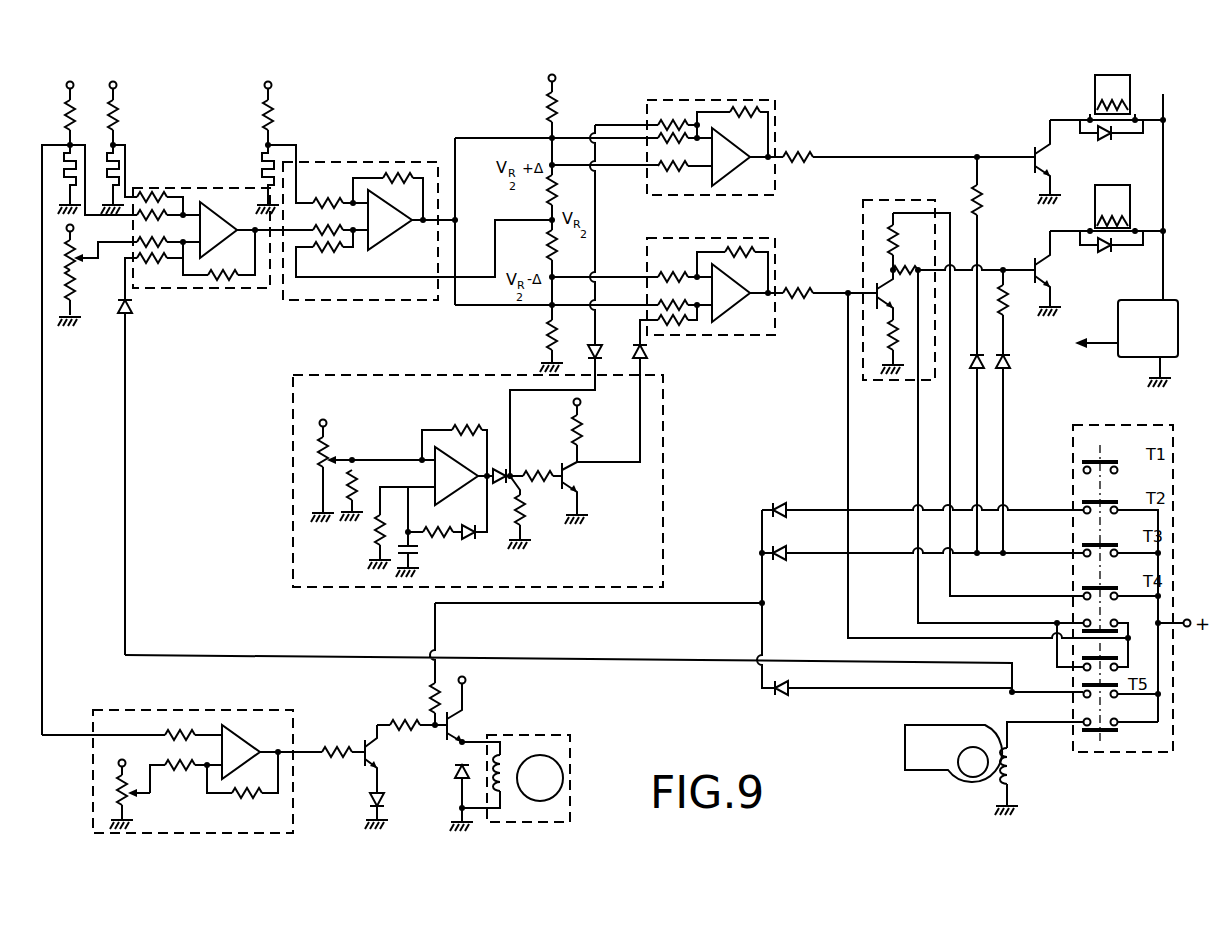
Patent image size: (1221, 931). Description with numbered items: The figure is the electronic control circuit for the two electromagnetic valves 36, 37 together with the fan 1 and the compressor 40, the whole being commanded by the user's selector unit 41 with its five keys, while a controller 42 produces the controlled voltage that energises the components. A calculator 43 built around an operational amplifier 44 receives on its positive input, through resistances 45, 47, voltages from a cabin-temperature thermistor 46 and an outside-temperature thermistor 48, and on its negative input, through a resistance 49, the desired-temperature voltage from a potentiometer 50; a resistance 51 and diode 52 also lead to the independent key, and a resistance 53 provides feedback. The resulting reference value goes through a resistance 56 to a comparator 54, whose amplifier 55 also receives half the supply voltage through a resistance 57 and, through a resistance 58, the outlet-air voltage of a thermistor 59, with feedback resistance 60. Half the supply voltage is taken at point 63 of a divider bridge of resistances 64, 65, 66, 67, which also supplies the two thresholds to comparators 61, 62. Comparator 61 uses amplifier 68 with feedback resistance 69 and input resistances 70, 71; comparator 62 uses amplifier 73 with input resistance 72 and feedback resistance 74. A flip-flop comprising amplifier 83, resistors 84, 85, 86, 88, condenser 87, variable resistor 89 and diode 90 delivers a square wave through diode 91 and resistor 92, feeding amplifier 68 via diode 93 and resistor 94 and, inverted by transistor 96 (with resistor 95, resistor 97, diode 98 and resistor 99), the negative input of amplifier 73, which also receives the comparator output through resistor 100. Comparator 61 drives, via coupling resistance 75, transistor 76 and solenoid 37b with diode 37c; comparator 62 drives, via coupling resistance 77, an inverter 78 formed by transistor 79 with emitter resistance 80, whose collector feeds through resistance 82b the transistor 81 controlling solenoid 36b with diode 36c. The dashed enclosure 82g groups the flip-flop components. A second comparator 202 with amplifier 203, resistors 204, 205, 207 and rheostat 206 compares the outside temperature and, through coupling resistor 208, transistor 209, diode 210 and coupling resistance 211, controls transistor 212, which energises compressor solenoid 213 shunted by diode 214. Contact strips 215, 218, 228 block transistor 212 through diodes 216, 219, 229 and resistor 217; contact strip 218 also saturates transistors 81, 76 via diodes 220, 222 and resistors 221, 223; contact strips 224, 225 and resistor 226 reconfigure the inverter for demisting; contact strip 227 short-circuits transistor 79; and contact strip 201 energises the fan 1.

The fan 1 is at (932, 725).
The electromagnetic valve 36 is at (1108, 192).
The actuator solenoid 36b is at (1115, 212).
The diode 36c is at (1111, 254).
The electromagnetic valve 37 is at (1098, 80).
The actuator solenoid 37b is at (1108, 103).
The diode 37c is at (1105, 140).
The compressor 40 is at (540, 733).
The selector unit 41 is at (1130, 425).
The controller 42 is at (1140, 305).
The calculator 43 is at (203, 183).
The operational amplifier 44 is at (218, 222).
The resistance 45 is at (162, 192).
The thermistor 46 is at (119, 162).
The resistance 47 is at (168, 219).
The thermistor 48 is at (67, 165).
The resistance 49 is at (137, 240).
The potentiometer 50 is at (82, 262).
The resistance 51 is at (160, 262).
The diode 52 is at (135, 305).
The resistance 53 is at (222, 270).
The comparator 54 is at (362, 160).
The operational amplifier 55 is at (392, 217).
The resistance 56 is at (322, 225).
The resistance 57 is at (340, 253).
The resistance 58 is at (328, 188).
The thermistor 59 is at (262, 160).
The resistance 60 is at (405, 175).
The comparator 61 is at (705, 100).
The comparator 62 is at (712, 236).
The point 63 is at (548, 218).
The resistance 64 is at (548, 337).
The resistance 65 is at (570, 275).
The resistance 66 is at (570, 202).
The resistance 67 is at (562, 113).
The operational amplifier 68 is at (739, 154).
The resistance 69 is at (745, 110).
The resistance 70 is at (683, 144).
The resistance 71 is at (683, 172).
The resistance 72 is at (676, 272).
The operational amplifier 73 is at (739, 291).
The resistance 74 is at (770, 250).
The coupling resistance 75 is at (800, 157).
The transistor 76 is at (1050, 158).
The coupling resistance 77 is at (800, 293).
The inverter 78 is at (880, 198).
The transistor 79 is at (885, 296).
The resistance 80 is at (888, 338).
The transistor 81 is at (1058, 275).
The resistance 82b is at (905, 264).
The timer circuit 82g is at (666, 402).
The operational amplifier 83 is at (459, 472).
The resistor 84 is at (356, 490).
The resistance 85 is at (318, 460).
The resistance 86 is at (375, 540).
The condenser 87 is at (420, 550).
The resistor 88 is at (462, 425).
The variable resistor 89 is at (440, 528).
The diode 90 is at (472, 540).
The diode 91 is at (500, 469).
The resistor 92 is at (535, 515).
The diode 93 is at (592, 353).
The resistor 94 is at (686, 122).
The coupling resistor 95 is at (538, 470).
The transistor 96 is at (585, 478).
The resistor 97 is at (572, 432).
The diode 98 is at (648, 350).
The resistor 99 is at (683, 330).
The resistor 100 is at (672, 308).
The contact strip 201 is at (1100, 735).
The comparator 202 is at (182, 710).
The operational amplifier 203 is at (253, 749).
The resistor 204 is at (182, 735).
The resistor 205 is at (189, 777).
The rheostat 206 is at (134, 798).
The resistor 207 is at (262, 800).
The coupling resistor 208 is at (336, 760).
The transistor 209 is at (383, 755).
The diode 210 is at (386, 798).
The coupling resistance 211 is at (397, 722).
The transistor 212 is at (465, 718).
The solenoid 213 is at (495, 760).
The diode 214 is at (458, 775).
The contact strip 215 is at (1100, 503).
The diode 216 is at (785, 502).
The resistor 217 is at (425, 695).
The contact strip 218 is at (1093, 546).
The diode 219 is at (782, 546).
The diode 220 is at (1012, 365).
The resistor 221 is at (1008, 312).
The diode 222 is at (985, 368).
The resistor 223 is at (985, 215).
The contact strip 224 is at (1093, 589).
The contact strip 225 is at (1105, 622).
The resistor 226 is at (888, 238).
The contact strip 227 is at (1090, 660).
The contact strip 228 is at (1088, 688).
The diode 229 is at (788, 686).